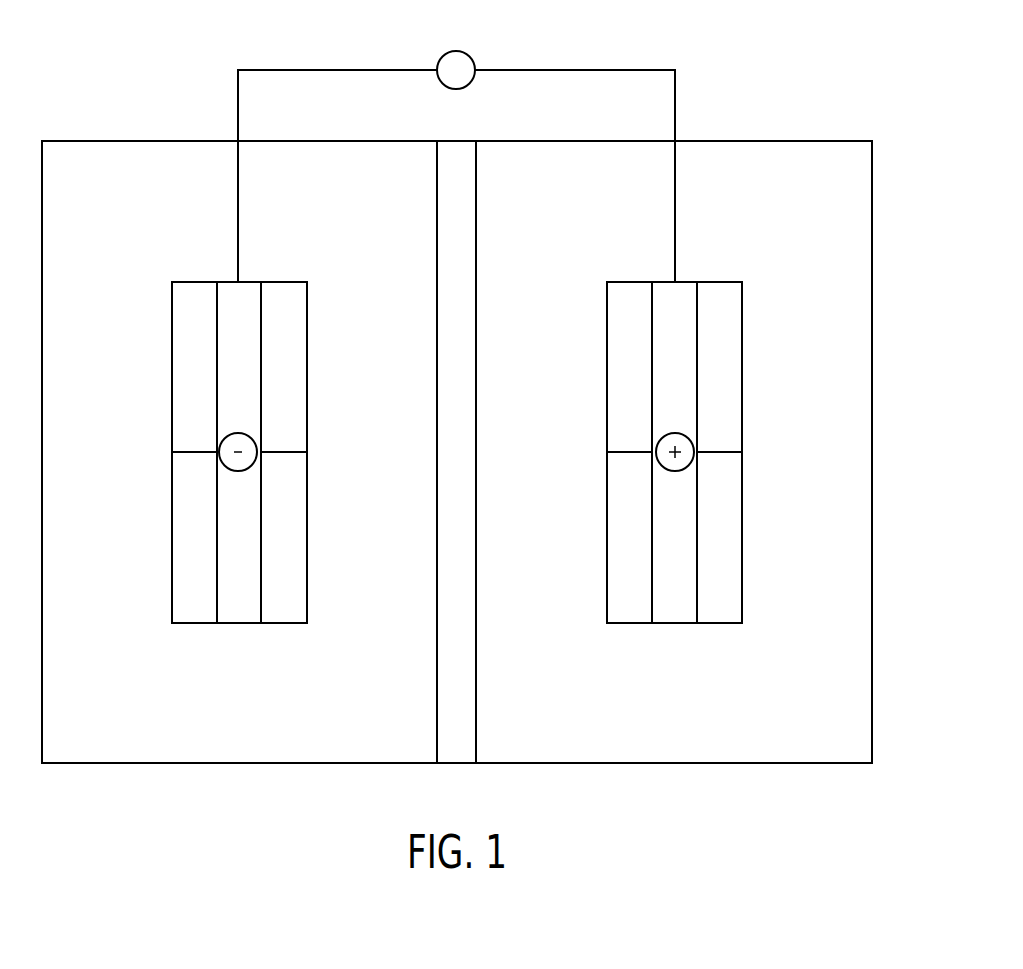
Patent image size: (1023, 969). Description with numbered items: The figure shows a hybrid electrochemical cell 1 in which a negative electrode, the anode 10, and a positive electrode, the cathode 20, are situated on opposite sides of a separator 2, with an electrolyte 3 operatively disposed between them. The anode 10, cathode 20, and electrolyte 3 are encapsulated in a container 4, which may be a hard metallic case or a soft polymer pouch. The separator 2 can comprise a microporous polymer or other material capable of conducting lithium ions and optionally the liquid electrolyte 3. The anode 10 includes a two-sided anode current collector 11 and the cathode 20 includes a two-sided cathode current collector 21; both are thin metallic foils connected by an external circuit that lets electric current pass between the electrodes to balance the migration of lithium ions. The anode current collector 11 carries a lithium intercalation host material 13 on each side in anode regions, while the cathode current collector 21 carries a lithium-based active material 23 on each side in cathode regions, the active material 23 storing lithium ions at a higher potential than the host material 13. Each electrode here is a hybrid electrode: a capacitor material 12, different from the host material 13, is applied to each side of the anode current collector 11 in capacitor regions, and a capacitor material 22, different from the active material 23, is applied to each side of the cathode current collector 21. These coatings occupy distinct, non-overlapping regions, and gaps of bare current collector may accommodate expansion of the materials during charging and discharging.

The hybrid electrochemical cell 1 is at (513, 392).
The separator 2 is at (456, 264).
The electrolyte 3 is at (400, 678).
The container 4 is at (872, 645).
The anode 10 is at (236, 515).
The anode current collector 11 is at (236, 612).
The capacitor material 12 is at (187, 358).
The lithium intercalation host material 13 is at (187, 533).
The cathode 20 is at (673, 515).
The cathode current collector 21 is at (673, 612).
The capacitor material 22 is at (623, 358).
The lithium-based active material 23 is at (623, 533).